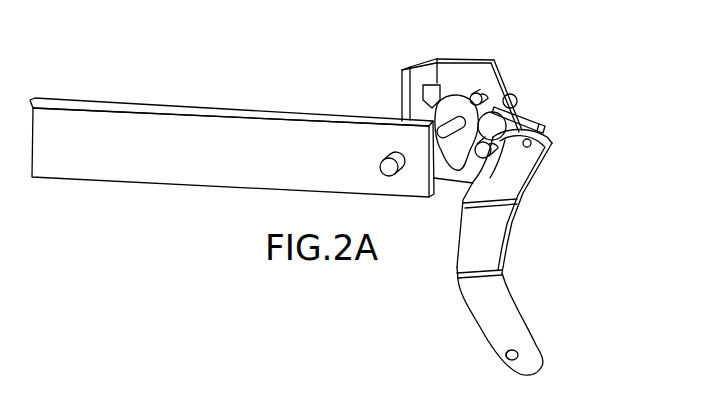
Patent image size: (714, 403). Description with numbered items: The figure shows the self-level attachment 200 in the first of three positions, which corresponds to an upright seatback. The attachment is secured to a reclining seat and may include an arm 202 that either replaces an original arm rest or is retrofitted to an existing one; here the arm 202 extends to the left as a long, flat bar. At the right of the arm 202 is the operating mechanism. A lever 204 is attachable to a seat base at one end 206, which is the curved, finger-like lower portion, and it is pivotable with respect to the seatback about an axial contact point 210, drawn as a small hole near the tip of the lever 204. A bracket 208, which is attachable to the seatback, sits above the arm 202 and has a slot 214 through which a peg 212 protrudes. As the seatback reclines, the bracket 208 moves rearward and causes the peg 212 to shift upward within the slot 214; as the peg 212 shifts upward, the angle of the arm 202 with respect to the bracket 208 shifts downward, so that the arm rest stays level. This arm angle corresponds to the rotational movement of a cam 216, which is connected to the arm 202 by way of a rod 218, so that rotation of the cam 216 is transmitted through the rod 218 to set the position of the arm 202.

The self-level attachment 200 is at (606, 88).
The arm 202 is at (148, 107).
The lever 204 is at (505, 277).
The end 206 is at (537, 345).
The bracket 208 is at (458, 62).
The axial contact point 210 is at (517, 357).
The peg 212 is at (546, 131).
The slot 214 is at (520, 97).
The cam 216 is at (445, 100).
The rod 218 is at (422, 104).